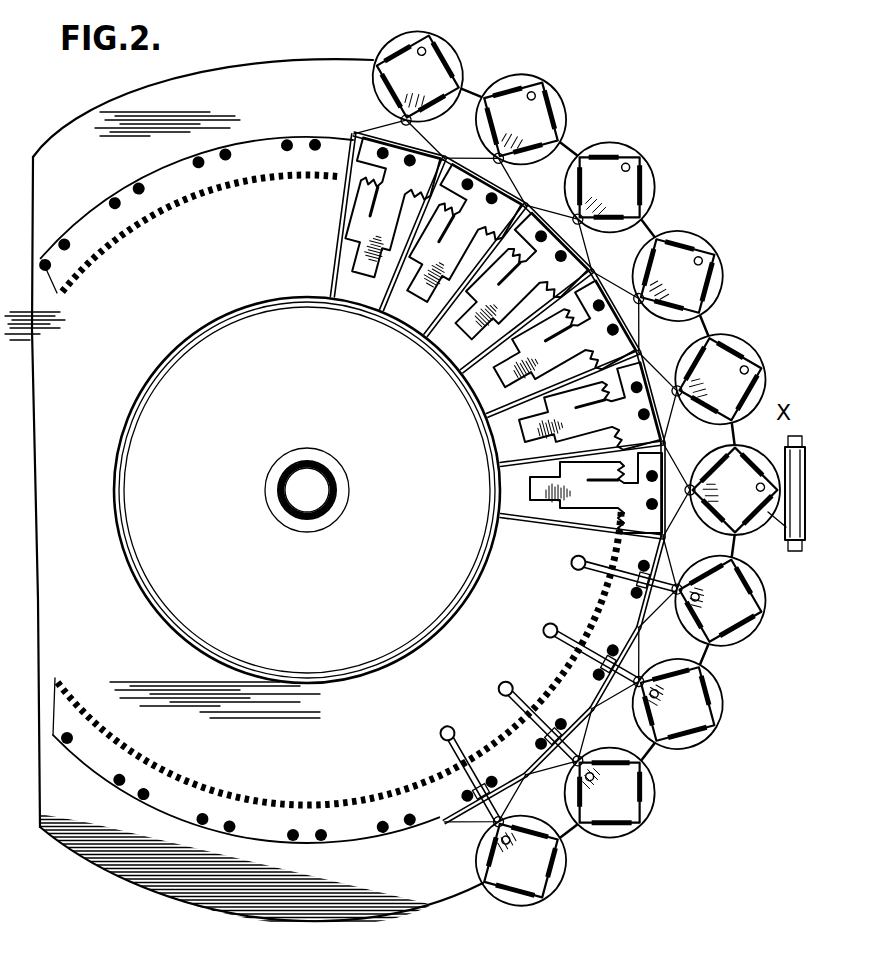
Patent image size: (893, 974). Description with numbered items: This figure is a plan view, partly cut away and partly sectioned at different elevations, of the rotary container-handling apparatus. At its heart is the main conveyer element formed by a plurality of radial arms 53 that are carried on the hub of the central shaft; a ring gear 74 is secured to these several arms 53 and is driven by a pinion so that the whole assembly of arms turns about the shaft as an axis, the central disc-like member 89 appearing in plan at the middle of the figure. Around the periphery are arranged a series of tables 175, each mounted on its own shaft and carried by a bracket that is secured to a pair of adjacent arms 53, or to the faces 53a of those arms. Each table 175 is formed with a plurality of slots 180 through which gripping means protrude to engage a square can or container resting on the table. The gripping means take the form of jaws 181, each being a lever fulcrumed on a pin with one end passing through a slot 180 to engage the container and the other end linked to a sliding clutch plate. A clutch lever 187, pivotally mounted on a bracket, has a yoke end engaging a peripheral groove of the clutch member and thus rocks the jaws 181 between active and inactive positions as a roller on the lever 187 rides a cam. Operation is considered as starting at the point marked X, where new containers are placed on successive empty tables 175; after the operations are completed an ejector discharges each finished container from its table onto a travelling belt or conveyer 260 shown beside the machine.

The radial arms 53 is at (384, 296).
The faces of arms 53a is at (437, 161).
The ring gear 74 is at (122, 239).
The disc 89 is at (234, 327).
The table 175 is at (514, 72).
The slots 180 is at (608, 165).
The jaws 181 is at (640, 182).
The clutch lever 187 is at (570, 630).
The conveyer 260 is at (793, 521).